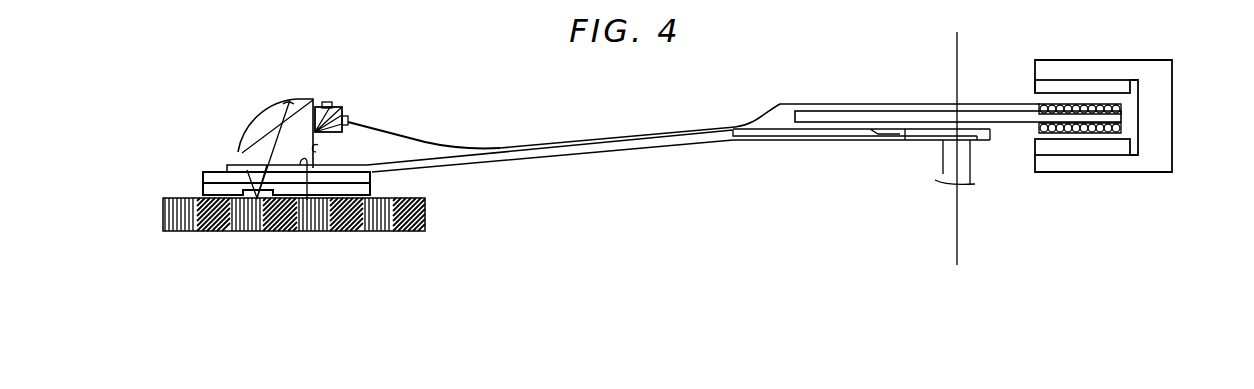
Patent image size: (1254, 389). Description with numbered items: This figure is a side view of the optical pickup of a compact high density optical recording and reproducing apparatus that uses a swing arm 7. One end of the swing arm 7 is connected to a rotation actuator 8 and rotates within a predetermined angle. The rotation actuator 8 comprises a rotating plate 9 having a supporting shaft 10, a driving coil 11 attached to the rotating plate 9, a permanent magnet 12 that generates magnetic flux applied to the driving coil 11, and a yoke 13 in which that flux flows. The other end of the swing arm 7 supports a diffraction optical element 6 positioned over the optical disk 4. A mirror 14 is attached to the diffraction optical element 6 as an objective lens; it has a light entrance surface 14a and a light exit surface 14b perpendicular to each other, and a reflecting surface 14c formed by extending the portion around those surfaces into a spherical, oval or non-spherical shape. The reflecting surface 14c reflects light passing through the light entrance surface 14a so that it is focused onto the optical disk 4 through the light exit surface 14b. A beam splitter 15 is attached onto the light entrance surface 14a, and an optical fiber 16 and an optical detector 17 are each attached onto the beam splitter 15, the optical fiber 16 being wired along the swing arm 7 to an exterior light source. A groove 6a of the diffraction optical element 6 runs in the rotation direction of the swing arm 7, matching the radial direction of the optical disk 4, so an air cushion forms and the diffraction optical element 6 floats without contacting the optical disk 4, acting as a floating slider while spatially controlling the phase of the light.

The optical disk 4 is at (178, 222).
The diffraction optical element 6 is at (197, 165).
The groove 6a is at (246, 202).
The swing arm 7 is at (672, 150).
The rotation actuator 8 is at (988, 168).
The rotating plate 9 is at (842, 115).
The supporting shaft 10 is at (944, 178).
The driving coil 11 is at (1085, 133).
The permanent magnet 12 is at (1083, 88).
The yoke 13 is at (1172, 110).
The mirror 14 is at (264, 119).
The light entrance surface 14a is at (318, 150).
The light exit surface 14b is at (307, 200).
The reflecting surface 14c is at (288, 102).
The beam splitter 15 is at (345, 108).
The optical fiber 16 is at (410, 140).
The optical detector 17 is at (327, 102).